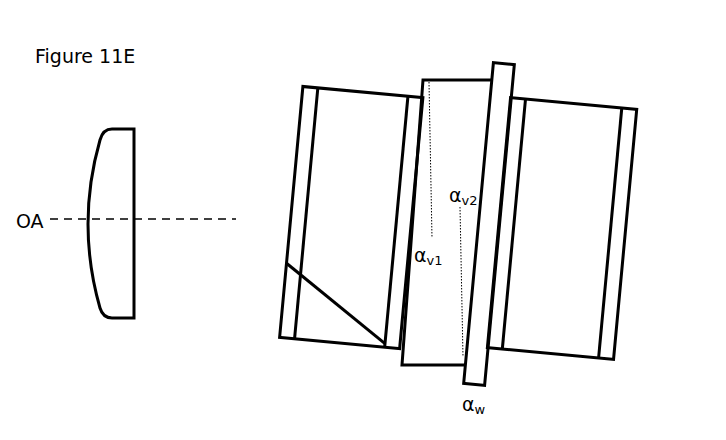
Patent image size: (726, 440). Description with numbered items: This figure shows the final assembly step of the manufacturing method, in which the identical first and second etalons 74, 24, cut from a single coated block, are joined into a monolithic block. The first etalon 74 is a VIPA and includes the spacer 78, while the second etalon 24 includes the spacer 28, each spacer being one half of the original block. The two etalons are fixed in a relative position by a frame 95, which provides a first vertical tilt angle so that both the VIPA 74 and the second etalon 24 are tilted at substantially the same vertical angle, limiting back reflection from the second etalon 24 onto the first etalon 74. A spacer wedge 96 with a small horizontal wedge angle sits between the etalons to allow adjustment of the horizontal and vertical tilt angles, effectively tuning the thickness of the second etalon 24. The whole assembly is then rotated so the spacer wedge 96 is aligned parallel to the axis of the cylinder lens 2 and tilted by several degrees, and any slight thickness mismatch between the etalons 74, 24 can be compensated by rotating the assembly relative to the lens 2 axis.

The cylinder lens 2 is at (122, 300).
The second etalon 24 is at (635, 148).
The spacer 28 is at (587, 340).
The first etalon (VIPA) 74 is at (300, 103).
The spacer 78 is at (356, 136).
The frame 95 is at (447, 88).
The spacer wedge 96 is at (513, 65).